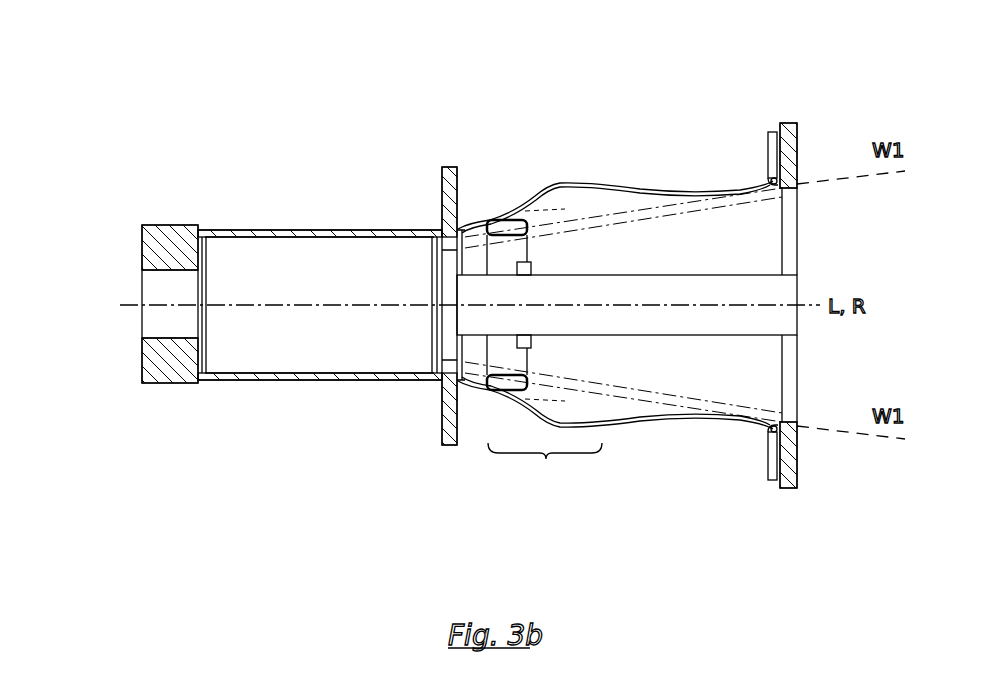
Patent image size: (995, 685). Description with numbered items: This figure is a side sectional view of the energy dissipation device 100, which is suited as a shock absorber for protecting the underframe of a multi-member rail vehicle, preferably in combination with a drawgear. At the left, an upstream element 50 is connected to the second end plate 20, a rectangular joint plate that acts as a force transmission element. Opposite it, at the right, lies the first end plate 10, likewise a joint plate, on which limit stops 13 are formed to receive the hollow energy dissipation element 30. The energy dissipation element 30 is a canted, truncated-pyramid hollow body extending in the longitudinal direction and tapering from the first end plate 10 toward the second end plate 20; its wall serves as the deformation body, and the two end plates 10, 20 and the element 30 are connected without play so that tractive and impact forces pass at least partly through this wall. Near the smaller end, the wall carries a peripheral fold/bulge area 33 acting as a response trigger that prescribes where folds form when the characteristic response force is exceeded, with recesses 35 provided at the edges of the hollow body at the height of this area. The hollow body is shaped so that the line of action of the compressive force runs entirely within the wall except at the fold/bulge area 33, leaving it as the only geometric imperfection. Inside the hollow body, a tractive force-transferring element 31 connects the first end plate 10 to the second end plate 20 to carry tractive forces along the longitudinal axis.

The energy dissipation device 100 is at (50, 118).
The upstream element 50 is at (292, 243).
The second end plate 20 is at (390, 260).
The tractive force-transferring element 31 is at (627, 217).
The recess 35 is at (454, 228).
The energy dissipation element 30 is at (620, 231).
The fold/bulge area 33 is at (545, 467).
The limit stop 13 is at (709, 247).
The first end plate 10 is at (727, 350).